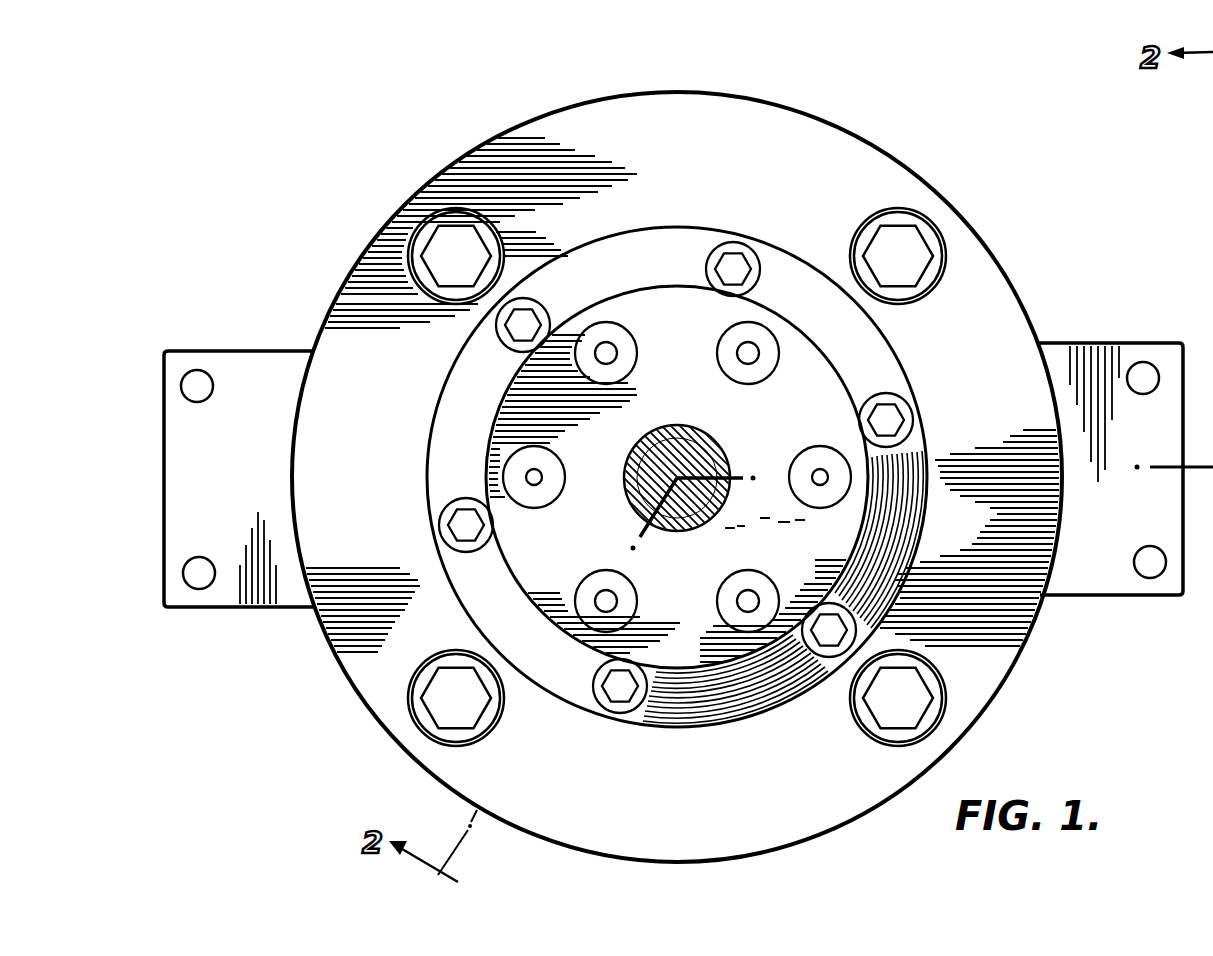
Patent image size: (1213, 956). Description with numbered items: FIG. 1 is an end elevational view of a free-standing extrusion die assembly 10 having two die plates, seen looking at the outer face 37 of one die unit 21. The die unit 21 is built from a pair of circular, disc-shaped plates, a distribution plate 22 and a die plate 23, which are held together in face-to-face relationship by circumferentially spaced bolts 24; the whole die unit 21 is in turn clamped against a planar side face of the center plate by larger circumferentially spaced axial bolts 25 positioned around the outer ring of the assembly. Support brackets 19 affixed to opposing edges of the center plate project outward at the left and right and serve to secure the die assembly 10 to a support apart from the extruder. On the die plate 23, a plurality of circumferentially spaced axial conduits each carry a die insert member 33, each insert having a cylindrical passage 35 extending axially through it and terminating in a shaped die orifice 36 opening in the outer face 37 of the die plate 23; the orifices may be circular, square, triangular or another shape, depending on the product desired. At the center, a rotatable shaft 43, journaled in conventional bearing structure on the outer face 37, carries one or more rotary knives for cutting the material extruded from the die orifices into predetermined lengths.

The die assembly 10 is at (338, 173).
The support brackets 19 is at (172, 452).
The die unit 21 is at (372, 648).
The distribution plate 22 is at (1013, 293).
The die plate 23 is at (922, 529).
The bolts 24 is at (525, 300).
The axial bolts 25 is at (450, 208).
The die insert member 33 is at (631, 355).
The cylindrical passage 35 is at (535, 480).
The die orifice 36 is at (543, 468).
The outer face 37 is at (677, 477).
The rotatable shaft 43 is at (634, 508).